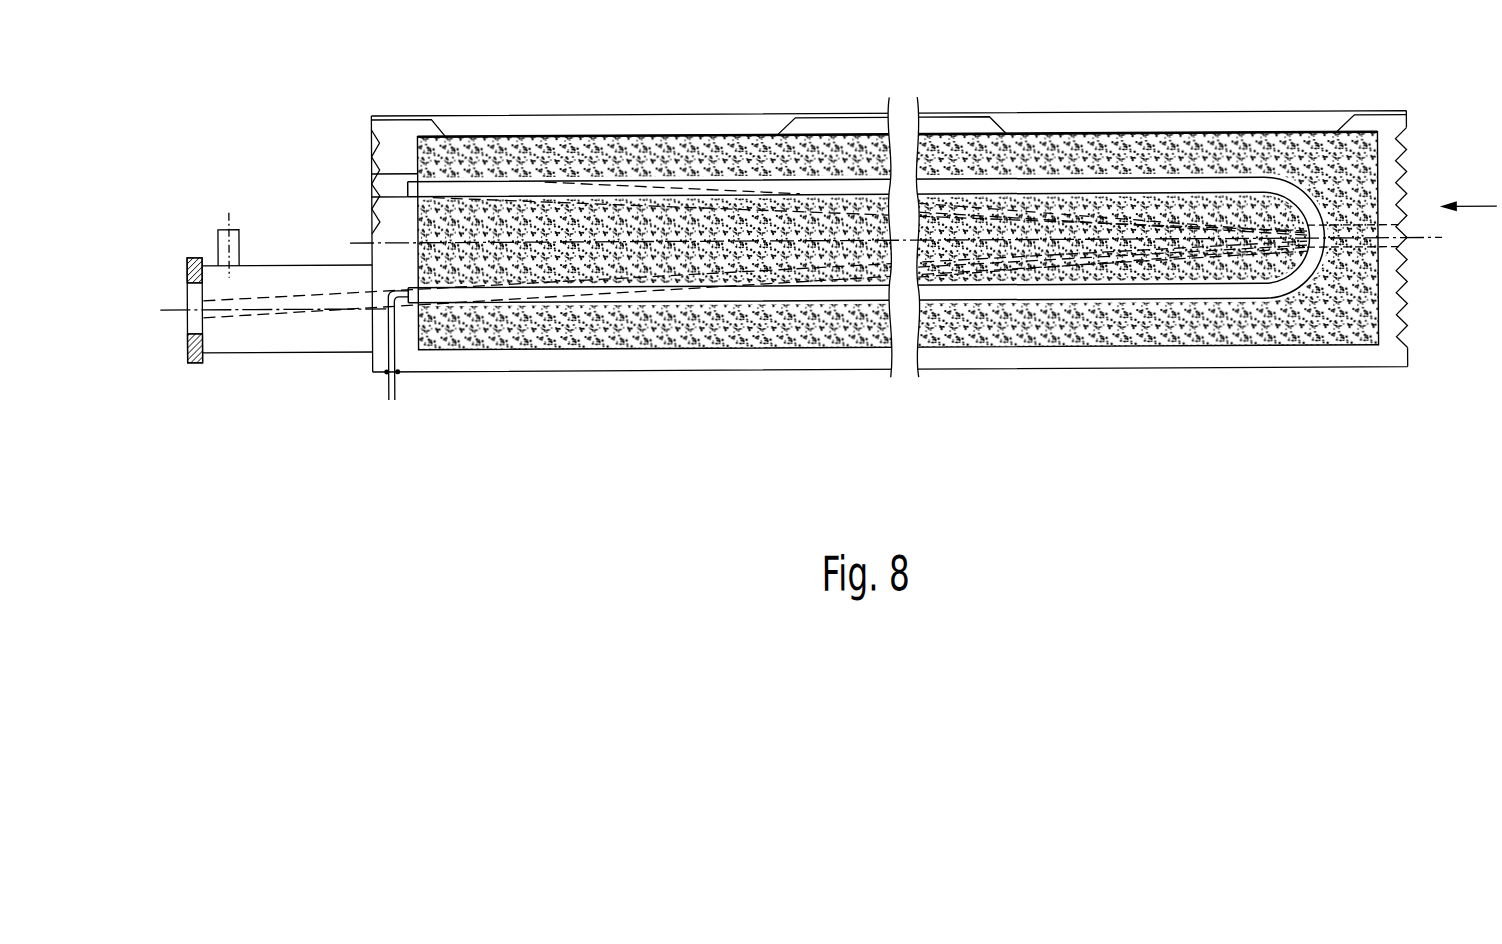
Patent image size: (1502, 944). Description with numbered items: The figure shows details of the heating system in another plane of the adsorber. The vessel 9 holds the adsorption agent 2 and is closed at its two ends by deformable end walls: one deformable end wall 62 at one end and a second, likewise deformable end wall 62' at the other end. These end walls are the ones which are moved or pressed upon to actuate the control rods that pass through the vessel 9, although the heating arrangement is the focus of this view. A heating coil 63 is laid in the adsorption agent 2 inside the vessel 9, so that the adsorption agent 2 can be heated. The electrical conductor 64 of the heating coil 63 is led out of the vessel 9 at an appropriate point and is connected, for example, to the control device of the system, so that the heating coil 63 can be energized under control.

The adsorption agent 2 is at (1163, 157).
The vessel 9 is at (1085, 134).
The deformable end wall 62' is at (340, 166).
The deformable end wall 62 is at (1431, 237).
The heating coil 63 is at (1004, 296).
The electrical conductor 64 is at (393, 388).